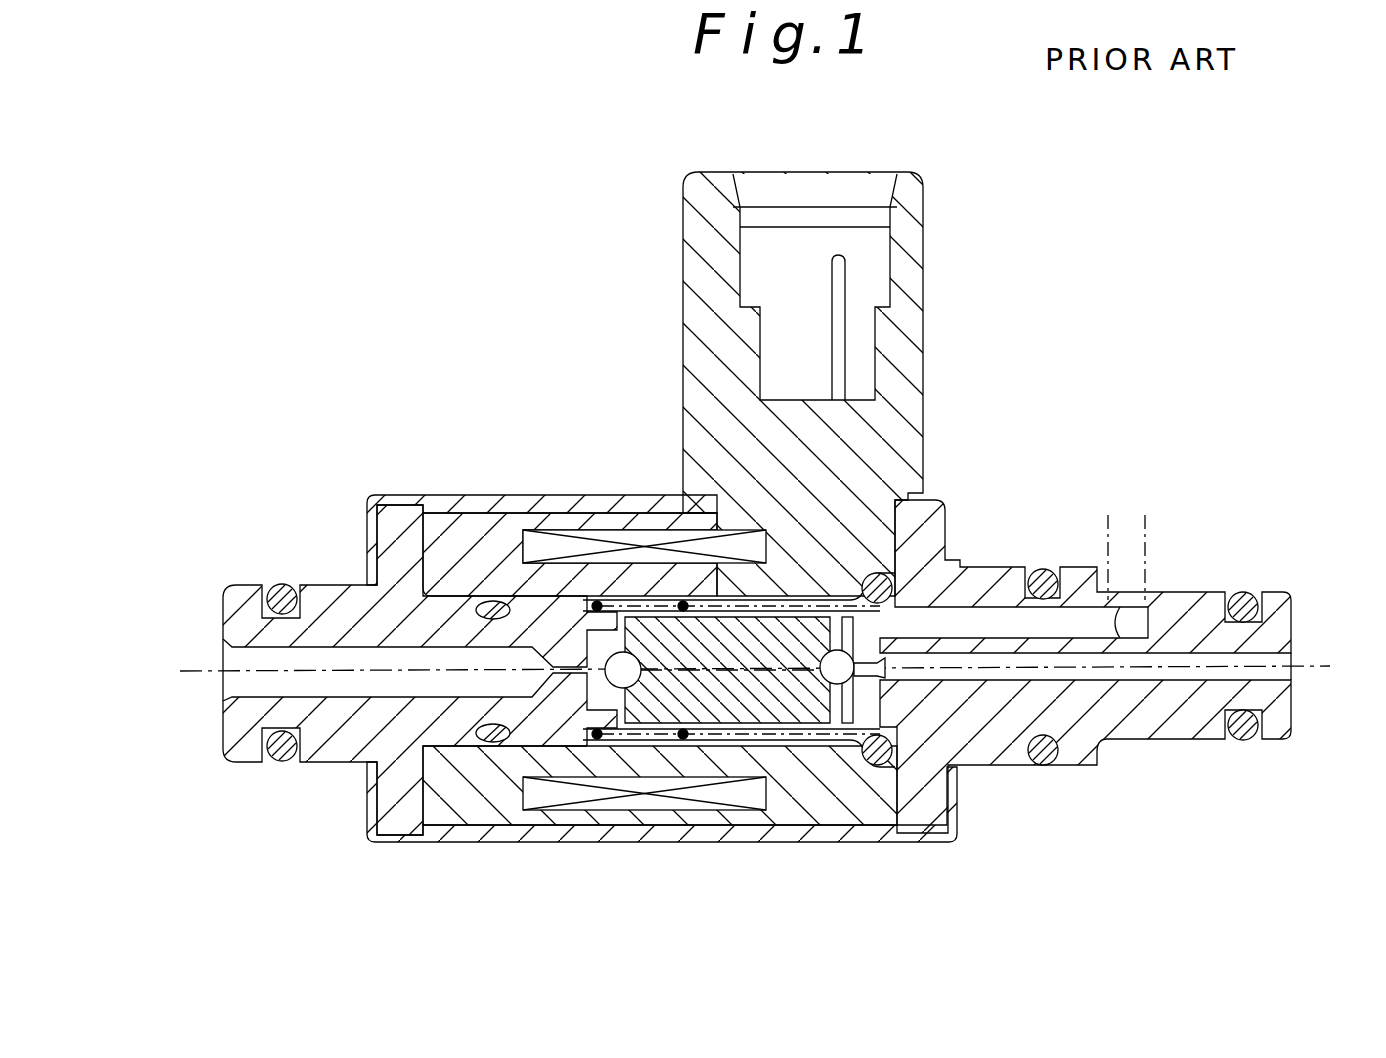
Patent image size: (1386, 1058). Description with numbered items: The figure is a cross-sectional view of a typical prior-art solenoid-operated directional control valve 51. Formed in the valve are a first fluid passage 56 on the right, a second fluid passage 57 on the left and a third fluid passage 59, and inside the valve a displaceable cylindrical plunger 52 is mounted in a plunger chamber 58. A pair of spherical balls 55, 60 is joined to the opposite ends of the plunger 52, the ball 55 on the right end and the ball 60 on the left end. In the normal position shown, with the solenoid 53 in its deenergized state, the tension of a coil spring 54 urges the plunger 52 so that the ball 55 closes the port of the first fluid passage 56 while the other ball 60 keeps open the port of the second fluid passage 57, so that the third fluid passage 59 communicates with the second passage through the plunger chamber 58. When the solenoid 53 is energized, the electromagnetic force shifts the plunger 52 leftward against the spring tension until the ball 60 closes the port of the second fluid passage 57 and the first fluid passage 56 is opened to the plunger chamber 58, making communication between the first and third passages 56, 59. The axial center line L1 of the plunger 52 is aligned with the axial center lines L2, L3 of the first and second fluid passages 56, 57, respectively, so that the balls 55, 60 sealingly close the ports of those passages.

The solenoid-operated directional control valve 51 is at (962, 398).
The plunger 52 is at (797, 633).
The solenoid 53 is at (555, 545).
The coil spring 54 is at (655, 742).
The ball 55 is at (852, 681).
The first fluid passage 56 is at (1295, 670).
The second fluid passage 57 is at (232, 690).
The plunger chamber 58 is at (712, 600).
The third fluid passage 59 is at (1140, 600).
The ball 60 is at (592, 688).
The axial center line of the plunger L1 is at (690, 662).
The axial center line of the first fluid passage L2 is at (1295, 665).
The axial center line of the second fluid passage L3 is at (222, 668).